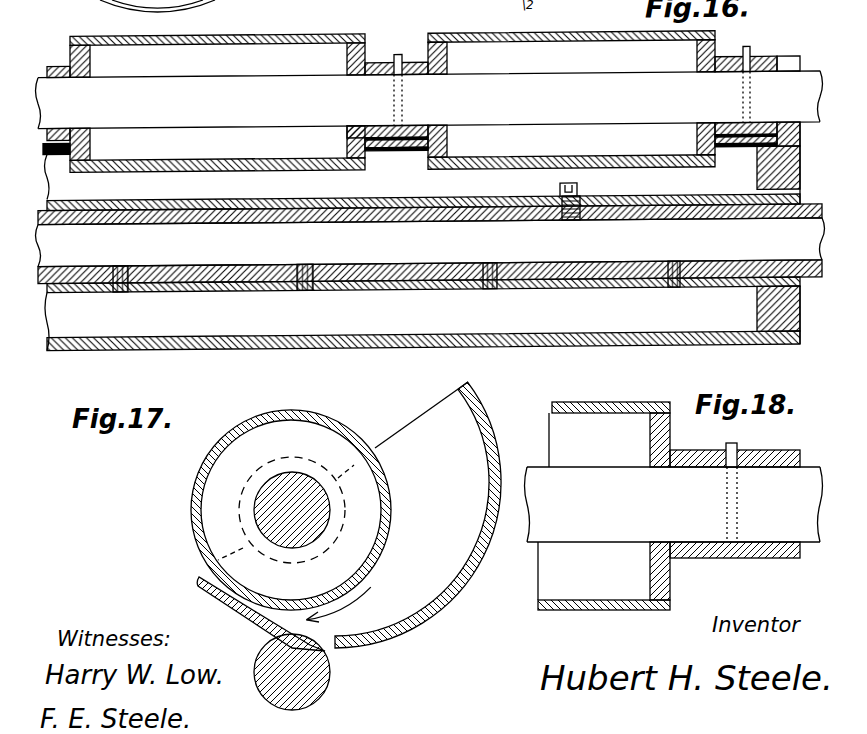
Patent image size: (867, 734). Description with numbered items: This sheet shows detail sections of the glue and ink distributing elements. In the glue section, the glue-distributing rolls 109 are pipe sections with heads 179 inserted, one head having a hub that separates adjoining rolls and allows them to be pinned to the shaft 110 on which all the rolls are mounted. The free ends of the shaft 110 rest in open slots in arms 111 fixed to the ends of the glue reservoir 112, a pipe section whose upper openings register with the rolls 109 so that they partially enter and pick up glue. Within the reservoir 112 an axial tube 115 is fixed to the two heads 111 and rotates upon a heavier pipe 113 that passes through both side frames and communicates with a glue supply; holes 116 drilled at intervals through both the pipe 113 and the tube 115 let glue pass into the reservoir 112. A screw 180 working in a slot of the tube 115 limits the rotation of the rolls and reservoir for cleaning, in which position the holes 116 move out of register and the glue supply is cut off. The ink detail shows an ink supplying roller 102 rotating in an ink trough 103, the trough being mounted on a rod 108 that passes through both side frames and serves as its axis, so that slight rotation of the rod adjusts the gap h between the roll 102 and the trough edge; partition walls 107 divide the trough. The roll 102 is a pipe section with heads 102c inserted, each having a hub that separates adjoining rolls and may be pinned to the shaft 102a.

In FIG. 16, the glue-distributing rolls 109 is at (268, 38).
In FIG. 16, the heads 179 is at (90, 60).
In FIG. 16, the shaft 110 is at (429, 100).
In FIG. 16, the glue reservoir 112 is at (398, 153).
In FIG. 16, the arms 111 is at (788, 64).
In FIG. 16, the axial tube 115 is at (251, 205).
In FIG. 16, the pipe 113 is at (430, 242).
In FIG. 16, the holes 116 is at (120, 293).
In FIG. 16, the screw 180 is at (560, 195).
In FIG. 17, the ink supplying roller 102 is at (290, 410).
In FIG. 18, the ink supplying roller 102 is at (598, 403).
In FIG. 17, the shaft 102a is at (288, 483).
In FIG. 18, the shaft 102a is at (674, 504).
In FIG. 18, the heads 102c is at (650, 433).
In FIG. 17, the ink trough 103 is at (483, 398).
In FIG. 17, the partition walls 107 is at (421, 437).
In FIG. 17, the gap h is at (208, 575).
In FIG. 17, the rod 108 is at (330, 660).